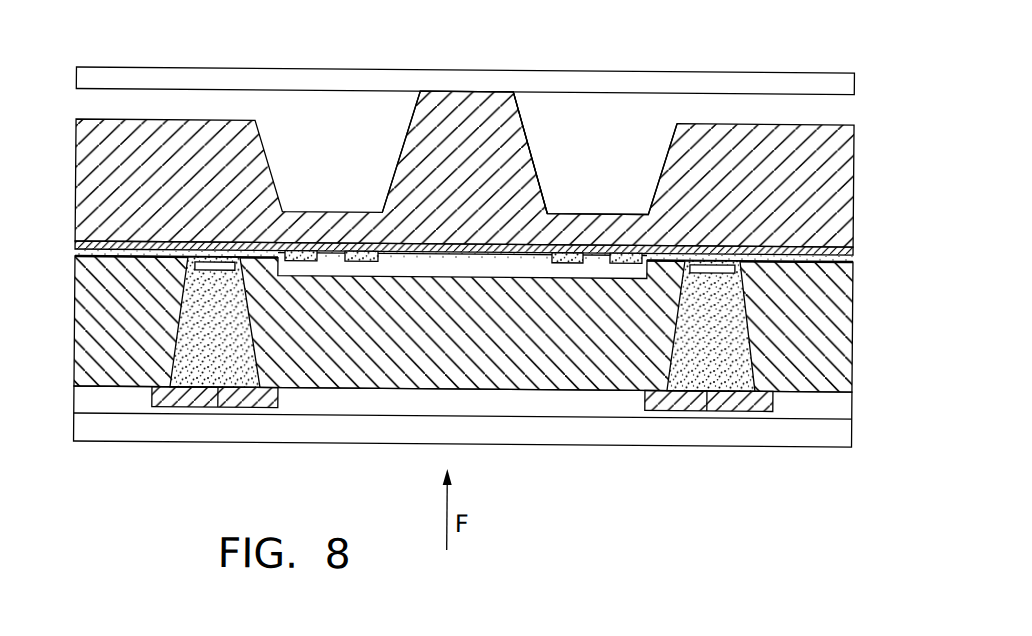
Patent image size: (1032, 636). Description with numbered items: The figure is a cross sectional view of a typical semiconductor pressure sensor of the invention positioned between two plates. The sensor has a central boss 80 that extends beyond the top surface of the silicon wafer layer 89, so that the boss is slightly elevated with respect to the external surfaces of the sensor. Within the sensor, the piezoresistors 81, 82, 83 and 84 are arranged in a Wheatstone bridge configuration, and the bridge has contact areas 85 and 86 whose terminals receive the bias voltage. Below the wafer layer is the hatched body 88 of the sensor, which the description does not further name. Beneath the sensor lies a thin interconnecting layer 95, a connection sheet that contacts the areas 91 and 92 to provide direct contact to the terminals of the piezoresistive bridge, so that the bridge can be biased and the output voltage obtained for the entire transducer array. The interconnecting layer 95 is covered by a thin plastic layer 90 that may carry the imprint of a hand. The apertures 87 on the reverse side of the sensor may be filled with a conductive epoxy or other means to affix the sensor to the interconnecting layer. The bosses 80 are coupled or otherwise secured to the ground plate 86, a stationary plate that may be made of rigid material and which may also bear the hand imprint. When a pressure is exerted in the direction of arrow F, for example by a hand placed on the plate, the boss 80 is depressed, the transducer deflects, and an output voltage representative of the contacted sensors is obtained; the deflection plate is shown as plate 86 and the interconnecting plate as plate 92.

The central boss 80 is at (481, 110).
The piezoresistor 81 is at (304, 249).
The piezoresistor 82 is at (366, 250).
The piezoresistor 83 is at (568, 259).
The piezoresistor 84 is at (627, 259).
The contact area 85 is at (215, 332).
The ground plate 86 is at (806, 67).
The aperture 87 is at (594, 209).
The lower insulating body 88 is at (803, 319).
The silicon wafer layer 89 is at (804, 182).
The thin plastic layer 90 is at (155, 431).
The contact area 91 is at (248, 406).
The contact area 92 is at (773, 398).
The thin interconnecting layer 95 is at (843, 398).